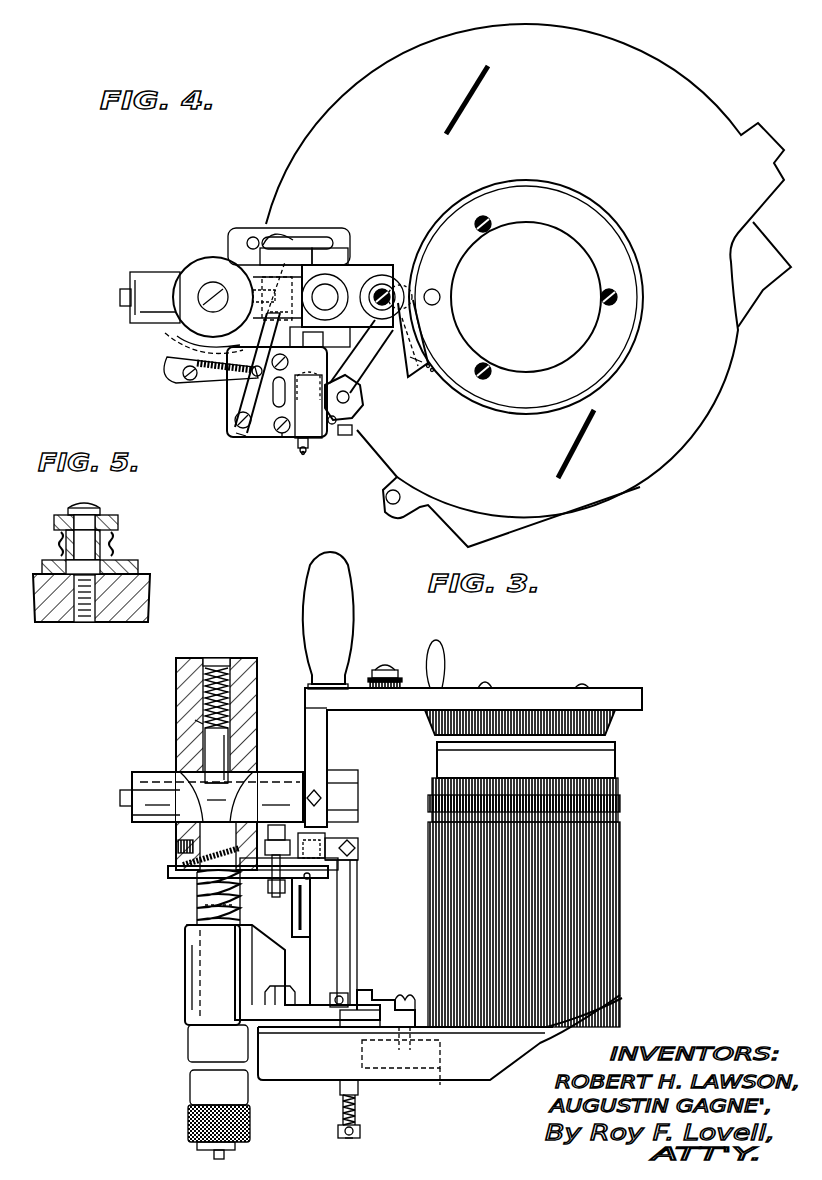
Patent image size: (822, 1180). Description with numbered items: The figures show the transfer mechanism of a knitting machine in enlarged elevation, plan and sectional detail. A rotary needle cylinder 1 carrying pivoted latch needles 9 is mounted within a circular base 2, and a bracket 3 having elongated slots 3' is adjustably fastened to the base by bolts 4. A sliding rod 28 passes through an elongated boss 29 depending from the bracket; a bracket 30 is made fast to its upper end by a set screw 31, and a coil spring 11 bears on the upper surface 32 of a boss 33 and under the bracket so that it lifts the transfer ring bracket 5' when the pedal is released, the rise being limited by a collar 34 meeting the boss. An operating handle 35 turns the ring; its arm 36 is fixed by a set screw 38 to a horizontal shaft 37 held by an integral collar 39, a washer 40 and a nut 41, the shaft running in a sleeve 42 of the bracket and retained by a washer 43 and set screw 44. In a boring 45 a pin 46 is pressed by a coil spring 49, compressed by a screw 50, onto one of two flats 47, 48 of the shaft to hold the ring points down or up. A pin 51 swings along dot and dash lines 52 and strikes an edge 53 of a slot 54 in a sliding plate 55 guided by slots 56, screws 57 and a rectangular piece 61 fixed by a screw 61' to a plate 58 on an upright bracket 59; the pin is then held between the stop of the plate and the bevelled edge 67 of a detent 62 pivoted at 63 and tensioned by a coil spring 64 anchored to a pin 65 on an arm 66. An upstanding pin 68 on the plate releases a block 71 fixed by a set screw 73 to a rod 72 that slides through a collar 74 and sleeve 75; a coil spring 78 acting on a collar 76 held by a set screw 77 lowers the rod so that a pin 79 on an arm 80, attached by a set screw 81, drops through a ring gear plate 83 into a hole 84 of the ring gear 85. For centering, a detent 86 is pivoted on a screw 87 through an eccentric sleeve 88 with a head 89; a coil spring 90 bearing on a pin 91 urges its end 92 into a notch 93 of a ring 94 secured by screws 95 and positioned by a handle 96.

In FIG. 3, the needle cylinder 1 is at (620, 866).
In FIG. 4, the circular base 2 is at (418, 508).
In FIG. 3, the circular base 2 is at (400, 1080).
In FIG. 4, the bracket 3 is at (283, 236).
In FIG. 3, the bracket 3 is at (307, 974).
In FIG. 4, the elongated slots 3' is at (299, 225).
In FIG. 4, the screws or bolts 4 is at (270, 232).
In FIG. 3, the screws or bolts 4 is at (278, 986).
In FIG. 4, the bracket 5' is at (520, 297).
In FIG. 5, the bracket 5' is at (99, 598).
In FIG. 3, the bracket 5' is at (545, 719).
In FIG. 3, the needles 9 is at (615, 766).
In FIG. 3, the coil spring 11 is at (205, 905).
In FIG. 3, the sliding rod 28 is at (182, 1154).
In FIG. 3, the elongated sleeve or boss 29 is at (188, 1046).
In FIG. 4, the bracket 30 is at (198, 262).
In FIG. 3, the bracket 30 is at (176, 672).
In FIG. 3, the set screw 31 is at (178, 846).
In FIG. 3, the upper surface 32 is at (186, 926).
In FIG. 3, the boss 33 is at (185, 985).
In FIG. 3, the collar 34 is at (188, 1124).
In FIG. 4, the operating handle 35 is at (341, 305).
In FIG. 3, the operating handle 35 is at (306, 600).
In FIG. 3, the arm 36 is at (304, 700).
In FIG. 3, the shaft 37 is at (150, 780).
In FIG. 3, the set screw 38 is at (318, 790).
In FIG. 3, the collar 39 is at (303, 775).
In FIG. 3, the washer 40 is at (327, 775).
In FIG. 3, the nut 41 is at (358, 782).
In FIG. 4, the sleeve 42 is at (162, 266).
In FIG. 3, the sleeve 42 is at (165, 772).
In FIG. 3, the washer 43 is at (134, 810).
In FIG. 4, the set screw 44 is at (125, 297).
In FIG. 3, the set screw 44 is at (120, 798).
In FIG. 3, the hole or boring 45 is at (200, 722).
In FIG. 3, the pin 46 is at (216, 755).
In FIG. 3, the flat portion 47 is at (213, 793).
In FIG. 3, the flat portion 48 is at (221, 803).
In FIG. 3, the coil spring 49 is at (230, 688).
In FIG. 3, the screw 50 is at (218, 659).
In FIG. 4, the pin 51 is at (256, 294).
In FIG. 3, the pin 51 is at (278, 893).
In FIG. 4, the dot and dash lines 52 is at (168, 336).
In FIG. 4, the edge 53 is at (286, 284).
In FIG. 4, the slot 54 is at (330, 260).
In FIG. 4, the plate 55 is at (275, 410).
In FIG. 3, the plate 55 is at (300, 870).
In FIG. 4, the longitudinal slots 56 is at (288, 409).
In FIG. 4, the screws or pins 57 is at (287, 437).
In FIG. 4, the plate 58 is at (228, 422).
In FIG. 3, the plate 58 is at (255, 878).
In FIG. 3, the upright bracket 59 is at (305, 941).
In FIG. 4, the rectangular piece 61 is at (317, 450).
In FIG. 3, the rectangular piece 61 is at (323, 839).
In FIG. 4, the screw 61' is at (314, 465).
In FIG. 3, the screw 61' is at (323, 889).
In FIG. 4, the detent 62 is at (248, 397).
In FIG. 4, the pivot 63 is at (243, 436).
In FIG. 4, the coil spring 64 is at (212, 372).
In FIG. 3, the coil spring 64 is at (195, 862).
In FIG. 4, the pin 65 is at (186, 378).
In FIG. 4, the arm 66 is at (166, 362).
In FIG. 4, the bevelled edge 67 is at (270, 309).
In FIG. 4, the upstanding pin 68 is at (308, 376).
In FIG. 4, the block 71 is at (350, 416).
In FIG. 3, the block 71 is at (358, 848).
In FIG. 3, the rod 72 is at (357, 888).
In FIG. 4, the set screw 73 is at (348, 436).
In FIG. 3, the set screw 73 is at (358, 858).
In FIG. 3, the collar 74 is at (340, 1016).
In FIG. 3, the sleeve 75 is at (358, 1088).
In FIG. 3, the collar 76 is at (360, 1132).
In FIG. 3, the set screw 77 is at (352, 1138).
In FIG. 3, the coil spring 78 is at (356, 1110).
In FIG. 3, the pin 79 is at (412, 1046).
In FIG. 4, the arm 80 is at (361, 356).
In FIG. 3, the arm 80 is at (375, 1000).
In FIG. 4, the set screw 81 is at (333, 428).
In FIG. 3, the set screw 81 is at (337, 993).
In FIG. 4, the ring gear plate 83 is at (528, 285).
In FIG. 3, the ring gear plate 83 is at (538, 1021).
In FIG. 3, the recess or hole 84 is at (400, 1058).
In FIG. 3, the ring gear 85 is at (440, 1080).
In FIG. 4, the detent 86 is at (414, 372).
In FIG. 5, the detent 86 is at (138, 568).
In FIG. 4, the pin or screw 87 is at (392, 284).
In FIG. 5, the pin or screw 87 is at (92, 507).
In FIG. 3, the pin or screw 87 is at (380, 666).
In FIG. 5, the eccentric sleeve 88 is at (102, 546).
In FIG. 5, the head 89 is at (116, 525).
In FIG. 3, the head 89 is at (395, 676).
In FIG. 4, the coil spring 90 is at (405, 340).
In FIG. 5, the coil spring 90 is at (58, 545).
In FIG. 3, the coil spring 90 is at (398, 680).
In FIG. 4, the pin 91 is at (425, 358).
In FIG. 4, the end 92 is at (432, 370).
In FIG. 4, the notch 93 is at (428, 366).
In FIG. 4, the ring 94 is at (495, 384).
In FIG. 3, the ring 94 is at (582, 684).
In FIG. 4, the screws 95 is at (610, 305).
In FIG. 3, the screws 95 is at (490, 682).
In FIG. 4, the handle 96 is at (432, 289).
In FIG. 3, the handle 96 is at (441, 648).